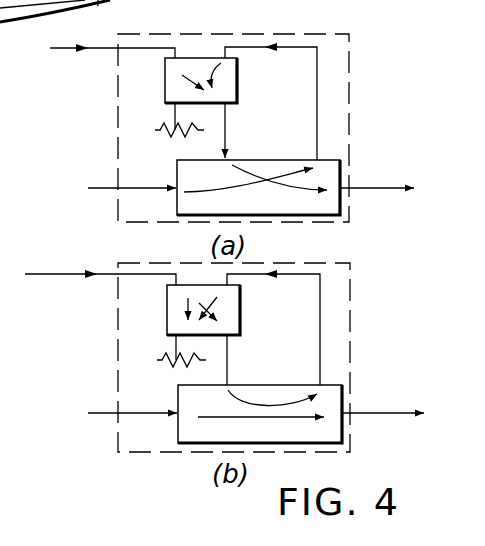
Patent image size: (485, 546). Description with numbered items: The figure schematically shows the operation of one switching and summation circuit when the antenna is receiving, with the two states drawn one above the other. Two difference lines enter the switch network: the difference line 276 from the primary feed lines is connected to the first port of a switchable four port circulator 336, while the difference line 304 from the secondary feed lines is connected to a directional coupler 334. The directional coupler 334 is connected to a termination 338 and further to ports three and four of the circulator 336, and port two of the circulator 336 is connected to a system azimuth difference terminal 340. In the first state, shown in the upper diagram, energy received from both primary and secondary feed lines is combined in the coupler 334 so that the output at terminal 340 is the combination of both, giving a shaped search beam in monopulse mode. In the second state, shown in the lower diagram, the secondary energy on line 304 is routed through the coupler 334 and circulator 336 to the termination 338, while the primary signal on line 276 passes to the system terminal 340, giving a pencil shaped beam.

The difference line 304 is at (99, 46).
The difference line 276 is at (106, 186).
The directional coupler 334 is at (237, 80).
The switchable four port circulator 336 is at (252, 162).
The termination 338 is at (158, 131).
The system azimuth difference terminal 340 is at (365, 184).